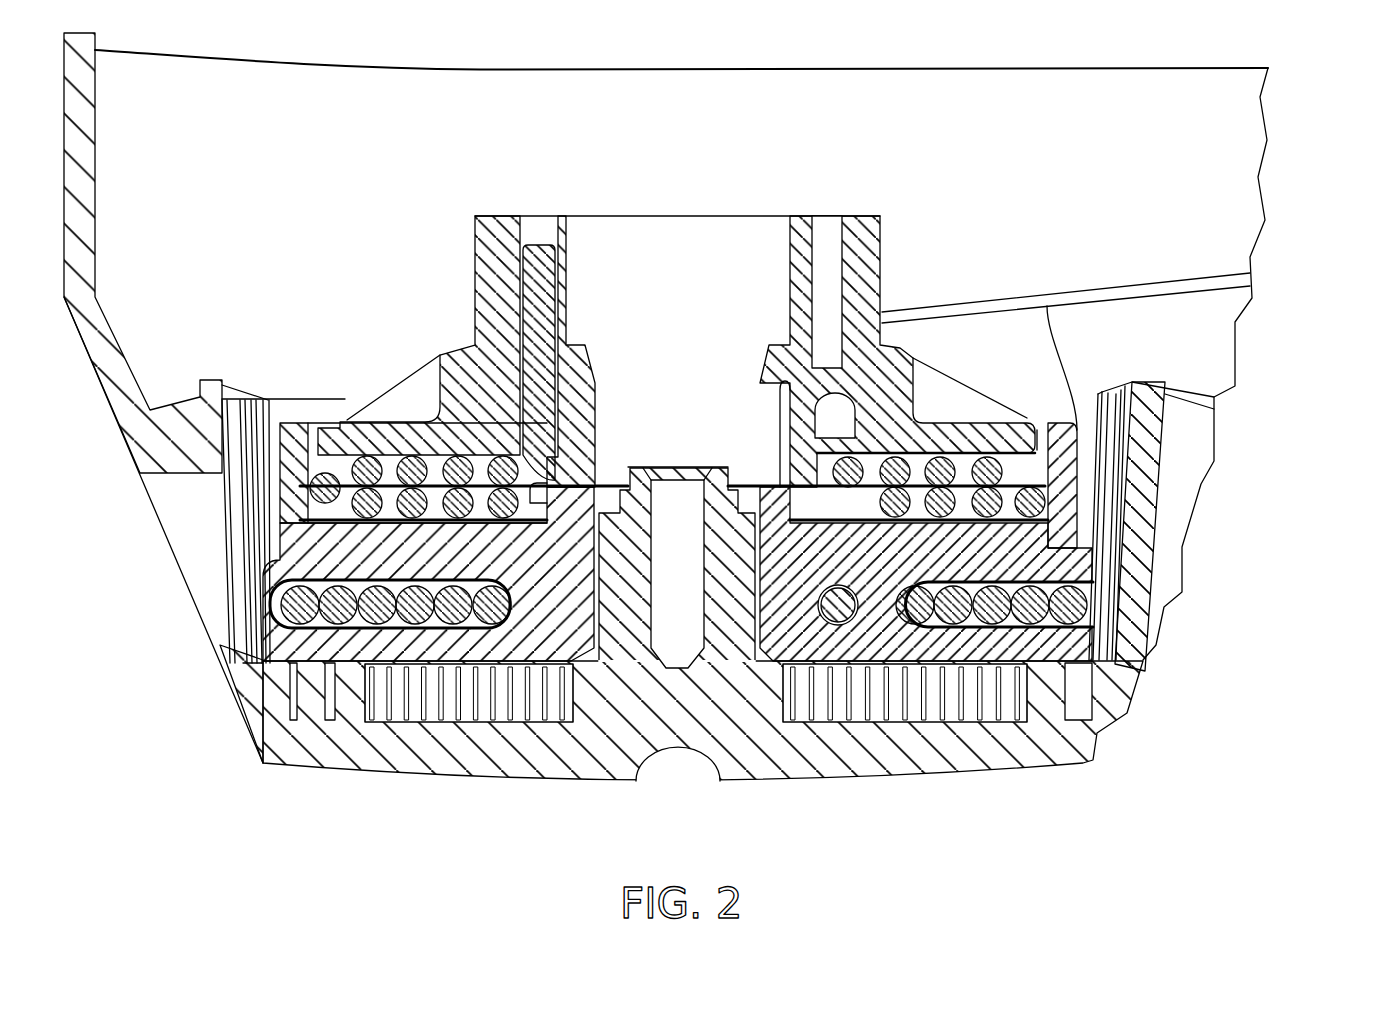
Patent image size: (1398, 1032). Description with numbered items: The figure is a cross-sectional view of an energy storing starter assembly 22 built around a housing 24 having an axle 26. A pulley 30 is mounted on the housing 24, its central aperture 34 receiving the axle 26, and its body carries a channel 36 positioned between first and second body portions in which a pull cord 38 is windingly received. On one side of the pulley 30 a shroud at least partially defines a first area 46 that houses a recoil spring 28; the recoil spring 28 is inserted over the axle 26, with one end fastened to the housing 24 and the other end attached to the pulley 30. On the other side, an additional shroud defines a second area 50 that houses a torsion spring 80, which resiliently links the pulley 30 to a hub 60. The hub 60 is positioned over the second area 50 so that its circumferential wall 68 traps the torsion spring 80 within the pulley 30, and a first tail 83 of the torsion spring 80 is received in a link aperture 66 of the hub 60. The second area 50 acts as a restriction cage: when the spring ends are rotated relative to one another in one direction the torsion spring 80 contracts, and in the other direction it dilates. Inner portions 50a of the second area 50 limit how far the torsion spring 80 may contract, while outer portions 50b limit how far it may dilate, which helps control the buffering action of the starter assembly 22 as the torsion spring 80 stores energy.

The energy storing starter assembly 22 is at (1263, 357).
The housing 24 is at (913, 777).
The axle 26 is at (760, 547).
The recoil spring 28 is at (457, 717).
The pulley 30 is at (247, 657).
The central aperture 34 is at (600, 545).
The channel 36 is at (1090, 628).
The pull cord 38 is at (1077, 600).
The first area 46 is at (380, 717).
The second area 50 is at (313, 468).
The inner portions of the second area 50a is at (540, 487).
The outer portions of the second area 50b is at (318, 510).
The hub 60 is at (950, 228).
The link aperture 66 is at (523, 265).
The circumferential wall 68 is at (398, 432).
The torsion spring 80 is at (1020, 462).
The first tail 83 is at (548, 290).